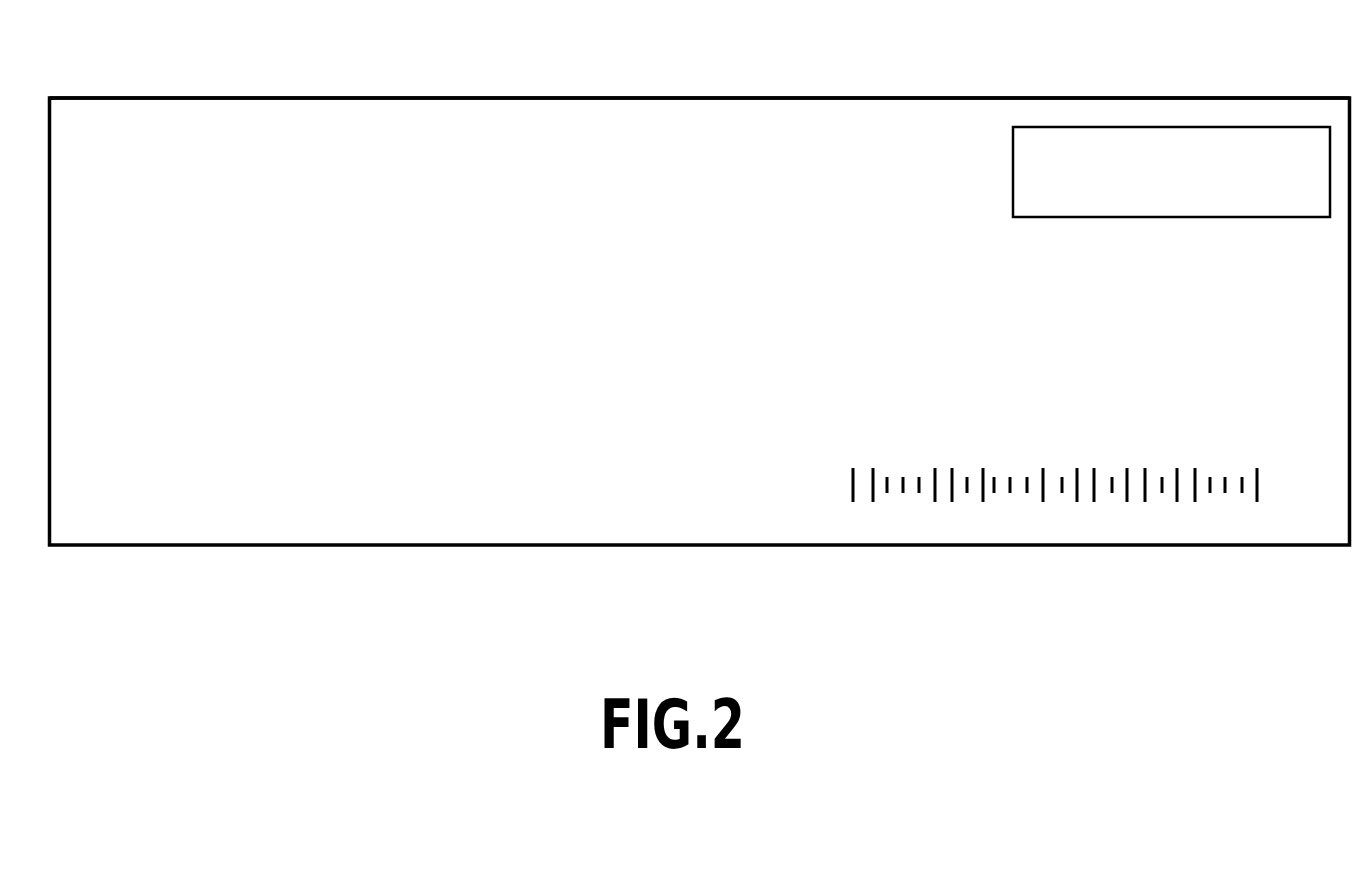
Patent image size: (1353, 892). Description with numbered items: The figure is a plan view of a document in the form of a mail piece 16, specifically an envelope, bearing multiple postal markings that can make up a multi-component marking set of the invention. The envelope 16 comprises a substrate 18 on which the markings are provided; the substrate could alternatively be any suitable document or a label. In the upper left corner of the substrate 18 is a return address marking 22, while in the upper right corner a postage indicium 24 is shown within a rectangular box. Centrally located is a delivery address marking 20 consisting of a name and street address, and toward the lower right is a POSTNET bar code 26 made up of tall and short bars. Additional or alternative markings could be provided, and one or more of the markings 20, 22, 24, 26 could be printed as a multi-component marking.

The mail piece 16 is at (260, 600).
The substrate 18 is at (602, 97).
The delivery address marking 20 is at (478, 320).
The return address marking 22 is at (187, 137).
The postage indicium 24 is at (1153, 127).
The POSTNET bar code 26 is at (1017, 500).